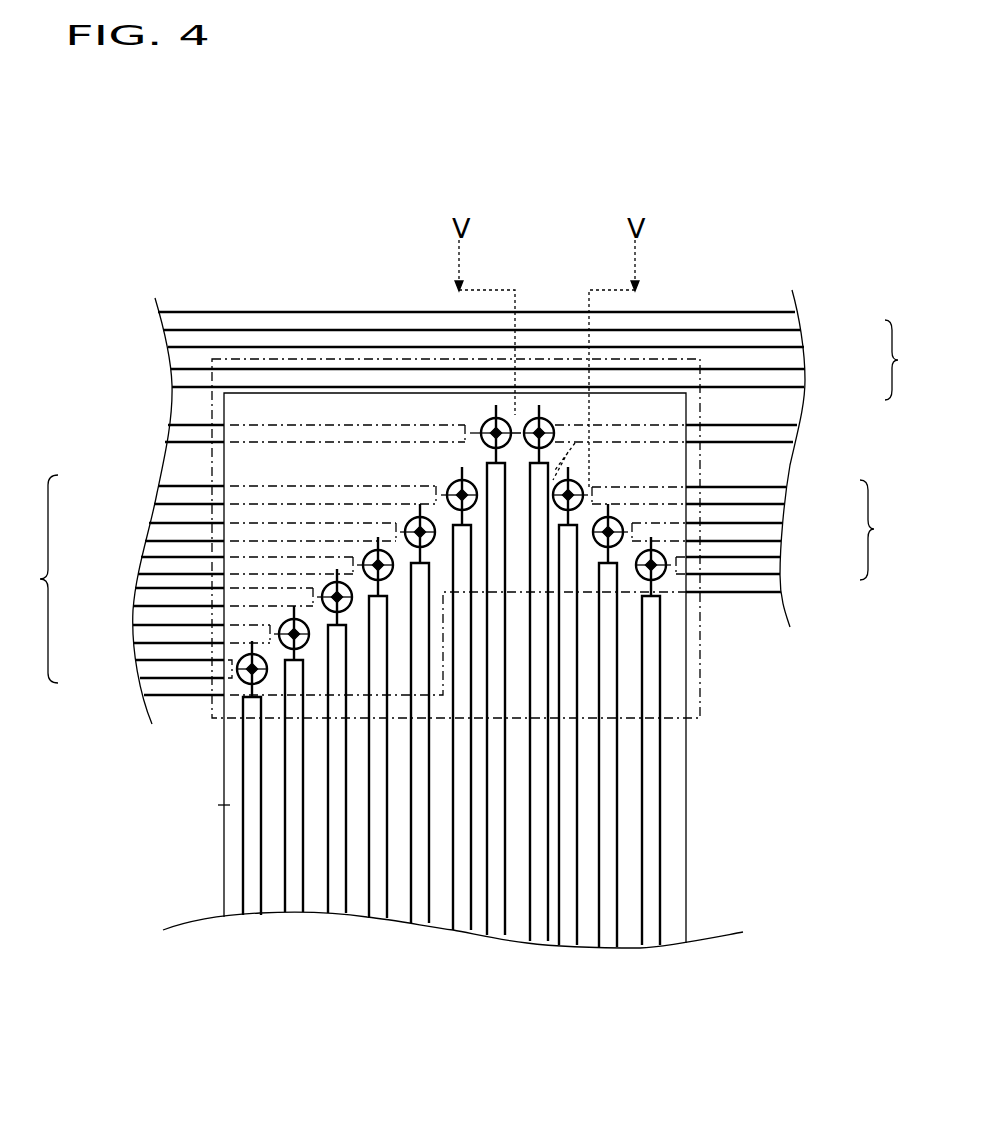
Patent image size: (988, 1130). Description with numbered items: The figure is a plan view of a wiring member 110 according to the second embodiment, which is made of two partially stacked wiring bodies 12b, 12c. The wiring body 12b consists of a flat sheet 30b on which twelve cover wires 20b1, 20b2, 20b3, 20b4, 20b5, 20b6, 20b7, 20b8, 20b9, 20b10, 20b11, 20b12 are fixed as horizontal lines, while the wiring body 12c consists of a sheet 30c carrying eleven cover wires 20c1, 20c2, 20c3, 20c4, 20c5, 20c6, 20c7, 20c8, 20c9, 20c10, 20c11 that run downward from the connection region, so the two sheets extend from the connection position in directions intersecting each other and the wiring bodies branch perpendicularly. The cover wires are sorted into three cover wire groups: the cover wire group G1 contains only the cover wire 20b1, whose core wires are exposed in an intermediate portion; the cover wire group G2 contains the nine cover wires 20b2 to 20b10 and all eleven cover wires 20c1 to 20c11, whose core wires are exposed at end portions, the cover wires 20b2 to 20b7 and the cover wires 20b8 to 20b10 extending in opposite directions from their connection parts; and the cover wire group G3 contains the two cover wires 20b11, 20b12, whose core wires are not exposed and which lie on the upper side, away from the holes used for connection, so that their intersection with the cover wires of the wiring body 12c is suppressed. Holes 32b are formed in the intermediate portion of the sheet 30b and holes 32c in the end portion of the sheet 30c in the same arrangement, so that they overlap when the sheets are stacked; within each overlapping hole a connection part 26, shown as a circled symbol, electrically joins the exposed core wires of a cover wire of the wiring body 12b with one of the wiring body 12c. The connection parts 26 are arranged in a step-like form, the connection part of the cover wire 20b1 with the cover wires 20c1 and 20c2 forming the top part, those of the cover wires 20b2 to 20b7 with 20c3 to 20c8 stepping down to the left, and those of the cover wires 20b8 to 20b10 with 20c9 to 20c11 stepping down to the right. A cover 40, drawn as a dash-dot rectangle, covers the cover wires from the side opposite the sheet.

The wiring member 110 is at (177, 153).
The wiring body 12b is at (295, 312).
The wiring body 12c is at (687, 848).
The sheet 30b is at (672, 312).
The sheet 30c is at (222, 805).
The hole 32b is at (550, 457).
The hole 32c is at (585, 363).
The cover 40 is at (701, 682).
The connection part 26 is at (244, 680).
The cover wire 20b1 is at (175, 433).
The cover wire 20b2 is at (168, 494).
The cover wire 20b3 is at (155, 533).
The cover wire 20b4 is at (145, 565).
The cover wire 20b5 is at (143, 600).
The cover wire 20b6 is at (143, 635).
The cover wire 20b7 is at (143, 668).
The cover wire 20b8 is at (783, 495).
The cover wire 20b9 is at (780, 532).
The cover wire 20b10 is at (777, 567).
The cover wire 20b11 is at (797, 338).
The cover wire 20b12 is at (797, 380).
The cover wire 20c1 is at (493, 932).
The cover wire 20c2 is at (535, 940).
The cover wire 20c3 is at (460, 923).
The cover wire 20c4 is at (418, 917).
The cover wire 20c5 is at (377, 910).
The cover wire 20c6 is at (335, 905).
The cover wire 20c7 is at (295, 903).
The cover wire 20c8 is at (250, 907).
The cover wire 20c9 is at (568, 938).
The cover wire 20c10 is at (607, 938).
The cover wire 20c11 is at (652, 935).
The cover wire group G1 is at (121, 435).
The cover wire group G2 is at (458, 579).
The cover wire group G3 is at (902, 360).